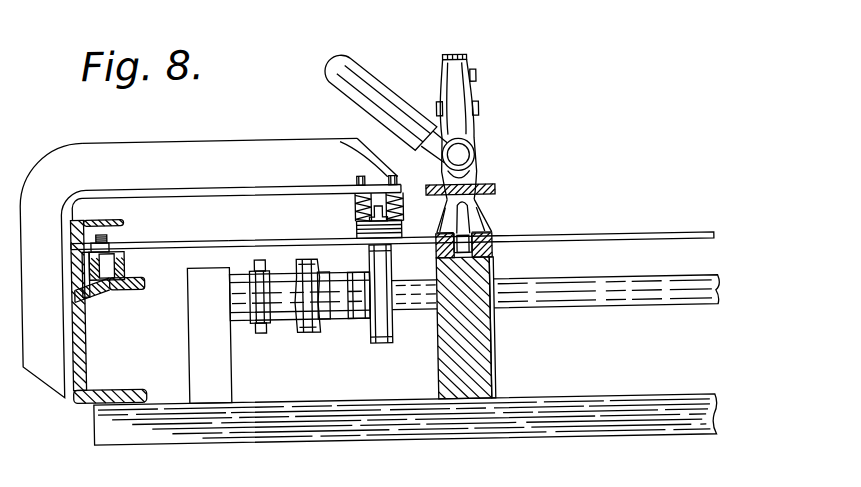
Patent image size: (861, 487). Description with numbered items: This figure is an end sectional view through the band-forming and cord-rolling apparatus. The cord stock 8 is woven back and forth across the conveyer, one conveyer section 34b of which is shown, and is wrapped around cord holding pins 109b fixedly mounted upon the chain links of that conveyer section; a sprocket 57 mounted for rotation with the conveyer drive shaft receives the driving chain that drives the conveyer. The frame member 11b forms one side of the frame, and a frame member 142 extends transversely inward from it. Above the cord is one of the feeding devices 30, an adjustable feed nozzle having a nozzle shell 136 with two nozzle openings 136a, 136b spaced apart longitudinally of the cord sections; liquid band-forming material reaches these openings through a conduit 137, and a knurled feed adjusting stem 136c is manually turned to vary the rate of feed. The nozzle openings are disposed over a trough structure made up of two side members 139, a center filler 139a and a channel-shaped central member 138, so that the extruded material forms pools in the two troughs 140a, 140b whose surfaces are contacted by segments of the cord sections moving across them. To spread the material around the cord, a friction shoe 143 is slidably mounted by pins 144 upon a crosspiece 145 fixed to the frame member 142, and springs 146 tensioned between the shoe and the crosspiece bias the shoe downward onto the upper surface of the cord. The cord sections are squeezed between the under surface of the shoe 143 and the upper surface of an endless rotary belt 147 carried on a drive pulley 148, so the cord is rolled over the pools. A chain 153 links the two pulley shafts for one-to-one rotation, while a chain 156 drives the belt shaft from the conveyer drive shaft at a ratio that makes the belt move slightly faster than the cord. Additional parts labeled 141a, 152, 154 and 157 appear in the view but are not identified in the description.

The cord stock 8 is at (620, 236).
The frame member 11b is at (86, 360).
The feeding device 30 is at (492, 71).
The conveyer section 34b is at (107, 286).
The sprocket 57 is at (313, 225).
The cord holding pins 109b is at (110, 232).
The nozzle shell 136 is at (478, 92).
The nozzle opening 136a is at (440, 234).
The nozzle opening 136b is at (492, 240).
The knurled feed adjusting stem 136c is at (462, 55).
The conduit 137 is at (400, 50).
The channel-shaped central member 138 is at (472, 212).
The side members 139 is at (494, 336).
The center filler 139a is at (480, 360).
The trough 140a is at (485, 189).
The trough 140b is at (494, 251).
The base plate 141a is at (576, 395).
The frame member 142 is at (190, 137).
The friction shoe 143 is at (400, 243).
The pins 144 is at (348, 137).
The crosspiece 145 is at (400, 190).
The springs 146 is at (378, 204).
The endless rotary belt 147 is at (383, 344).
The drive pulley 148 is at (369, 338).
The support block 152 is at (191, 353).
The chain 153 is at (306, 330).
The collar flange 154 is at (298, 338).
The chain 156 is at (162, 228).
The clamp ring 157 is at (262, 332).